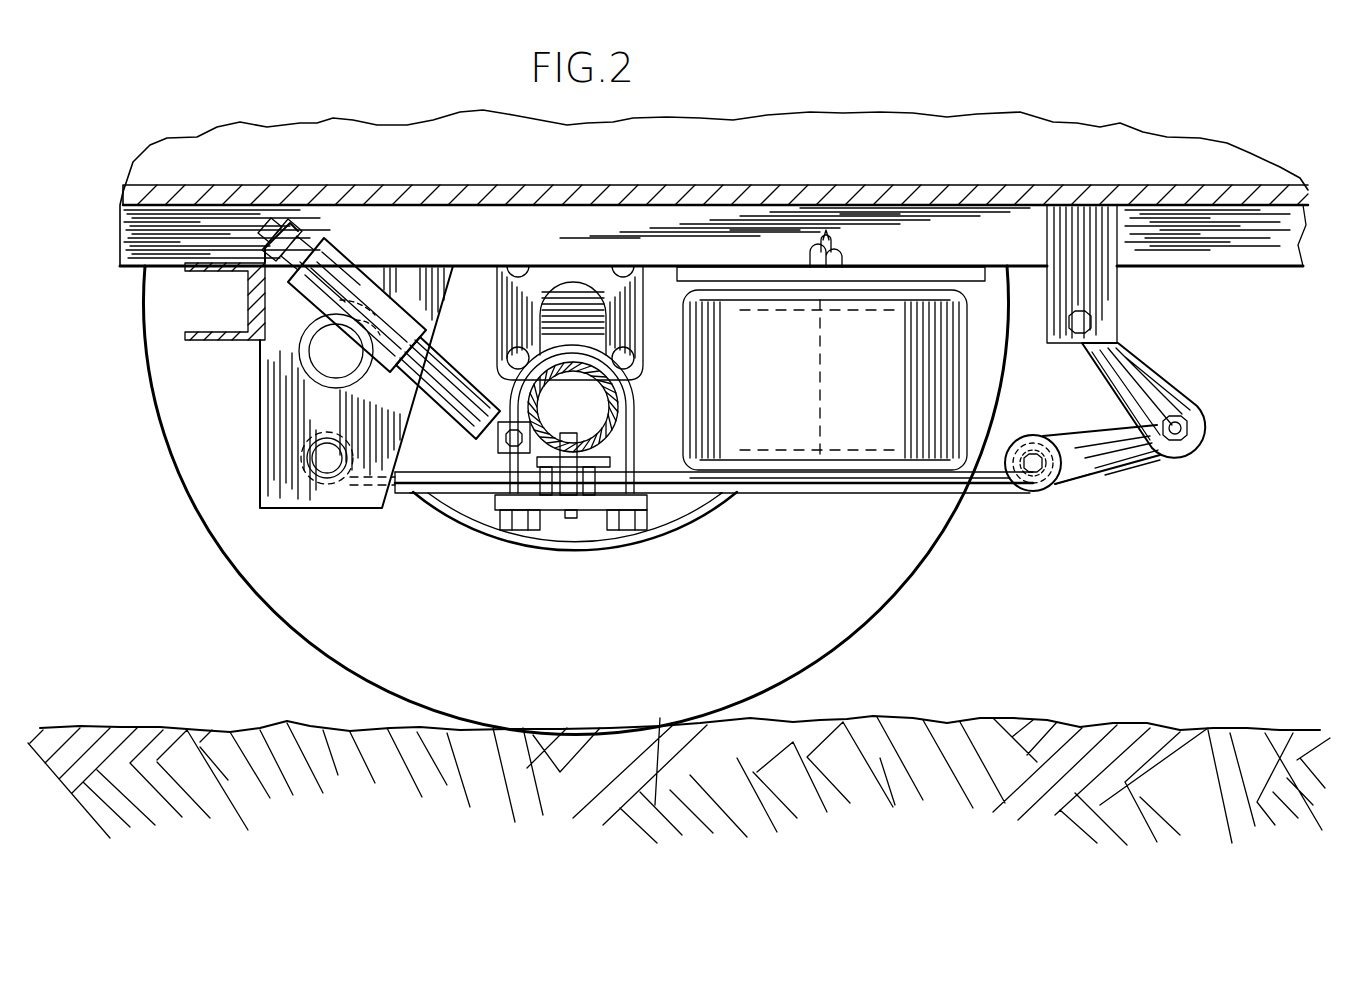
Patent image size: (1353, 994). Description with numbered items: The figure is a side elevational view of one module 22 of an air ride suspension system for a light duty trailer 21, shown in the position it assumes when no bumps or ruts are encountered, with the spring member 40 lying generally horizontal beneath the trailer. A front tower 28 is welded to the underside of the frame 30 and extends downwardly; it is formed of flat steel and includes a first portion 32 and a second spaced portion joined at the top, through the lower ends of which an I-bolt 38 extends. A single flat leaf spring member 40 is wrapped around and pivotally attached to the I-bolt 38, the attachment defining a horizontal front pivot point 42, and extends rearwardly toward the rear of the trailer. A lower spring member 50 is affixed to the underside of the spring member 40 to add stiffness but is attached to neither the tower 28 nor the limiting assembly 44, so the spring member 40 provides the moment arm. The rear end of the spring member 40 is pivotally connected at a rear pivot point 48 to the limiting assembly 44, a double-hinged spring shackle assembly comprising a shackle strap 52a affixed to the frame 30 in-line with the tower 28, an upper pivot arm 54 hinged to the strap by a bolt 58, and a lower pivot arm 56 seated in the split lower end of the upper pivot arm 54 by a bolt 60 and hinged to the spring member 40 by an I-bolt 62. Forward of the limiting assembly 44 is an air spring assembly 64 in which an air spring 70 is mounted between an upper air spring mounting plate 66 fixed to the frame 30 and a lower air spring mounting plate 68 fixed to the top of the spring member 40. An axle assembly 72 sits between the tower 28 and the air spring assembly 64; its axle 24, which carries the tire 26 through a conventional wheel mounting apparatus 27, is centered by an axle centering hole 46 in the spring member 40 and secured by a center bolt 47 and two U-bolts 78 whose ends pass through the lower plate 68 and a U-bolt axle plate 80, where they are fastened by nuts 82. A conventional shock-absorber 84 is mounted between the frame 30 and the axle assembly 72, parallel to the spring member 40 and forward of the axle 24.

The light duty trailer 21 is at (855, 146).
The module 22 is at (270, 532).
The axle 24 is at (610, 425).
The tire 26 is at (922, 546).
The wheel mounting apparatus 27 is at (542, 278).
The front tower 28 is at (290, 410).
The frame 30 is at (118, 228).
The first portion 32 is at (283, 478).
The I-bolt 38 is at (327, 462).
The spring member 40 is at (398, 488).
The front pivot point 42 is at (340, 478).
The limiting assembly 44 is at (1200, 383).
The axle centering hole 46 is at (550, 492).
The center bolt 47 is at (568, 432).
The rear pivot point 48 is at (1065, 482).
The lower spring member 50 is at (812, 495).
The shackle strap 52a is at (1100, 294).
The upper pivot arm 54 is at (1128, 368).
The lower pivot arm 56 is at (1125, 456).
The bolt 58 is at (1095, 345).
The bolt 60 is at (1185, 428).
The I-bolt 62 is at (1025, 482).
The air spring assembly 64 is at (880, 508).
The upper air spring mounting plate 66 is at (925, 272).
The lower air spring mounting plate 68 is at (920, 470).
The air spring 70 is at (935, 388).
The axle assembly 72 is at (608, 552).
The U-bolt 78 is at (630, 408).
The U-bolt axle plate 80 is at (592, 502).
The nuts 82 is at (497, 517).
The shock-absorber 84 is at (397, 313).